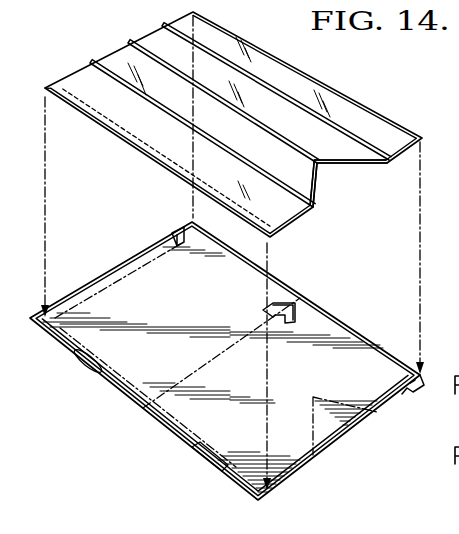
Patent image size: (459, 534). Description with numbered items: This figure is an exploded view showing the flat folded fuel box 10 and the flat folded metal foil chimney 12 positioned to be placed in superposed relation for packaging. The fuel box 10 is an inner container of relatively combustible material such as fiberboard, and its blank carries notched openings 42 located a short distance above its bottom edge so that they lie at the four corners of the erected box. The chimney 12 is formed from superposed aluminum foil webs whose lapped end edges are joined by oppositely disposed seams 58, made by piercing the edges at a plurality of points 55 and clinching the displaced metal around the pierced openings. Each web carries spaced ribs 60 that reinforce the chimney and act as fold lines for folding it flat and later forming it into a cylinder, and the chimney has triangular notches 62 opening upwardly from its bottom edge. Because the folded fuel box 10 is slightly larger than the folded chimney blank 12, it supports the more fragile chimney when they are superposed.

The fuel box 10 is at (104, 392).
The chimney member 12 is at (232, 251).
The notched openings 42 is at (181, 230).
The pierced points 55 is at (136, 140).
The seams 58 is at (99, 125).
The ribs 60 is at (279, 104).
The triangular notches 62 is at (340, 165).